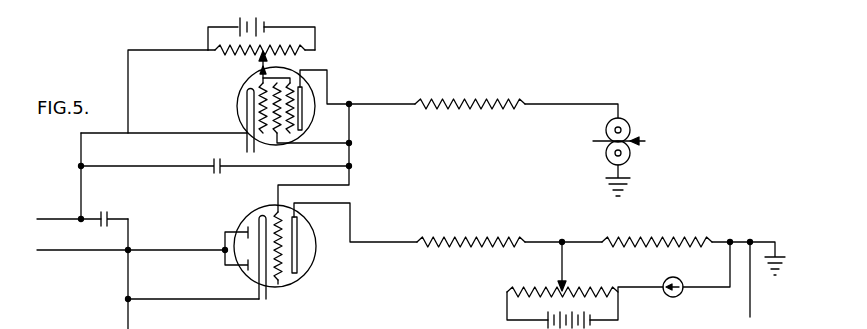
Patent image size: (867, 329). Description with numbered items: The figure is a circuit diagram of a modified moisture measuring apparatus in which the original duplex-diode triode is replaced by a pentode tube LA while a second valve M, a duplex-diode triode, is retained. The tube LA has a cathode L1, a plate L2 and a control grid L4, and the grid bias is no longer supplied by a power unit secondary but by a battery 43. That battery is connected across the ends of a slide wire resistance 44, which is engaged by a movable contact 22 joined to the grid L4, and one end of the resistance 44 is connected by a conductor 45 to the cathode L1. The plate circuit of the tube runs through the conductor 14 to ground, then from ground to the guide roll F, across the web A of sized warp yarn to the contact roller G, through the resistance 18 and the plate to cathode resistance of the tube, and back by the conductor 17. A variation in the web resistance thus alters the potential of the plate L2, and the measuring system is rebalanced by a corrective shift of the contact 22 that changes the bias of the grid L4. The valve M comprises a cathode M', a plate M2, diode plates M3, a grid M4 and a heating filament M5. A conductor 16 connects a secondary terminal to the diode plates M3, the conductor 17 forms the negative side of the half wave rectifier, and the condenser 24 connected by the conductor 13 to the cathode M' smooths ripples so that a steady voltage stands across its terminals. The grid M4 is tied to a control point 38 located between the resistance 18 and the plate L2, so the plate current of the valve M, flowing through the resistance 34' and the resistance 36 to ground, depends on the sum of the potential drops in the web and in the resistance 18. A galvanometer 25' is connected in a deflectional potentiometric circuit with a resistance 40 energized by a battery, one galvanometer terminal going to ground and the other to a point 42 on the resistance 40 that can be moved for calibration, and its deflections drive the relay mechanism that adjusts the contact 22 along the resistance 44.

The conductor 45 is at (128, 67).
The battery 43 is at (264, 27).
The slide wire resistance 44 is at (305, 53).
The movable contact 22 is at (259, 56).
The pentode tube LA is at (310, 120).
The control grid L4 is at (261, 96).
The cathode L1 is at (247, 104).
The plate L2 is at (301, 97).
The control point 38 is at (350, 104).
The resistance 18 is at (497, 108).
The contact roller G is at (623, 122).
The warp web A is at (637, 141).
The guide roll F is at (629, 158).
The conductor 17 is at (50, 218).
The condenser 24 is at (104, 211).
The conductor 16 is at (166, 249).
The conductor 13 is at (127, 283).
The valve M is at (284, 248).
The cathode M' is at (250, 237).
The tube heating filament M5 is at (278, 211).
The grid M4 is at (278, 282).
The diode plates M3 is at (246, 230).
The plate M2 is at (297, 240).
The resistance 34' is at (509, 223).
The resistance 36 is at (668, 241).
The resistance 40 is at (530, 291).
The calibration point 42 is at (564, 286).
The galvanometer 25' is at (693, 284).
The conductor 14 is at (752, 304).